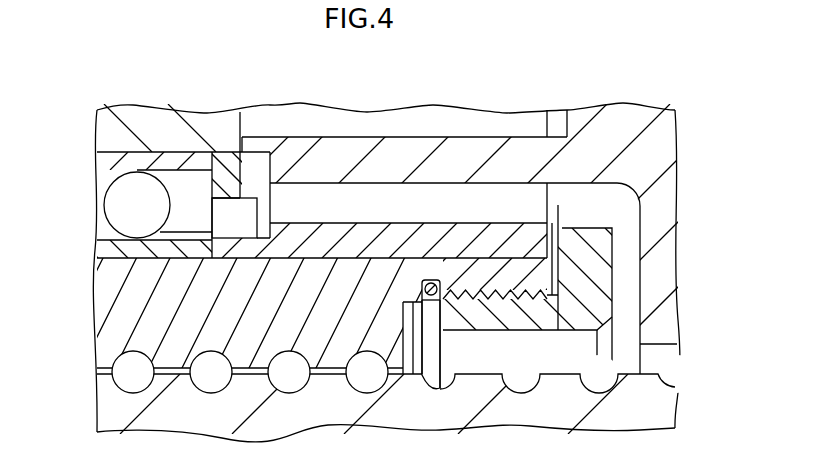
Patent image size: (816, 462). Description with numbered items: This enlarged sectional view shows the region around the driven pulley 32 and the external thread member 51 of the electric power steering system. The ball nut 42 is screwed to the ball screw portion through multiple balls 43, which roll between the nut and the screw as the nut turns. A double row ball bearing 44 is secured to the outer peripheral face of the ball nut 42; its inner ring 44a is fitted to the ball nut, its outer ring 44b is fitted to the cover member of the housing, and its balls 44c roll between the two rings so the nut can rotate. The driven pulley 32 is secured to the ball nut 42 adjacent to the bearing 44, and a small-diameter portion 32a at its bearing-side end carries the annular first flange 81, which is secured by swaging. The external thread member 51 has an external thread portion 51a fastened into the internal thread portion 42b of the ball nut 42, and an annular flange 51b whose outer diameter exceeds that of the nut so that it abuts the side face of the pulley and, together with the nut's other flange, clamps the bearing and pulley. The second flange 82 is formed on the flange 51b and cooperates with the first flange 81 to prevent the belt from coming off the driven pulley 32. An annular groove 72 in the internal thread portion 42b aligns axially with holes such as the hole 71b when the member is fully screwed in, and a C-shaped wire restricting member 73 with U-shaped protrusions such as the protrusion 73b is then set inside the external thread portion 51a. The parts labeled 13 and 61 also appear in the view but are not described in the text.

The base 13 is at (100, 400).
The driven pulley 32 is at (343, 233).
The small-diameter portion 32a is at (225, 243).
The ball nut 42 is at (98, 292).
The internal thread portion 42b is at (495, 290).
The balls 43 is at (109, 352).
The double row ball bearing 44 is at (117, 152).
The inner ring 44a is at (100, 250).
The outer ring 44b is at (102, 163).
The balls 44c is at (108, 196).
The external thread member 51 is at (618, 286).
The external thread portion 51a is at (533, 323).
The annular flange 51b is at (593, 228).
The sealing block 61 is at (230, 157).
The hole 71b is at (438, 320).
The annular groove 72 is at (440, 283).
The restricting member 73 is at (442, 380).
The protrusion 73b is at (417, 299).
The first flange 81 is at (256, 208).
The second flange 82 is at (561, 203).